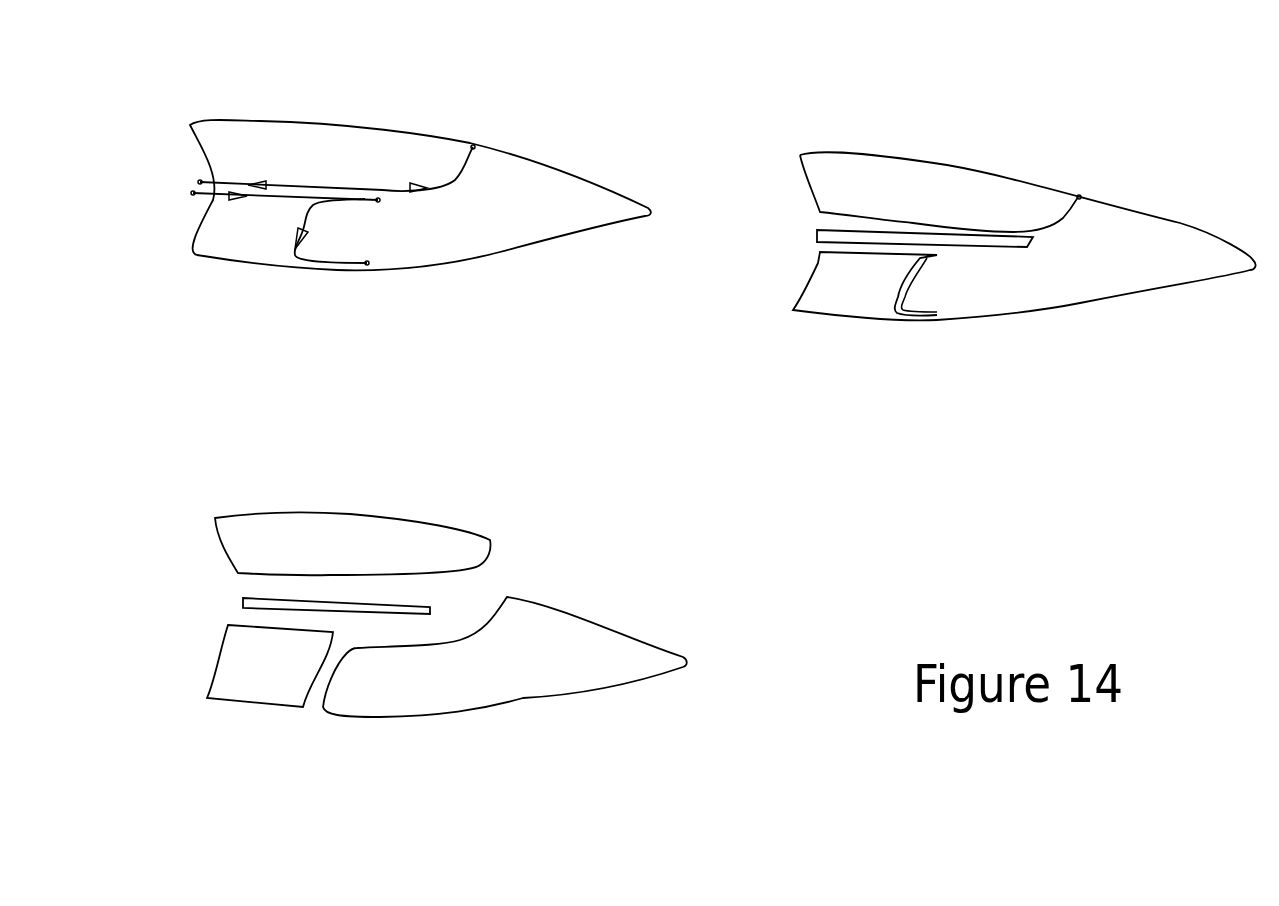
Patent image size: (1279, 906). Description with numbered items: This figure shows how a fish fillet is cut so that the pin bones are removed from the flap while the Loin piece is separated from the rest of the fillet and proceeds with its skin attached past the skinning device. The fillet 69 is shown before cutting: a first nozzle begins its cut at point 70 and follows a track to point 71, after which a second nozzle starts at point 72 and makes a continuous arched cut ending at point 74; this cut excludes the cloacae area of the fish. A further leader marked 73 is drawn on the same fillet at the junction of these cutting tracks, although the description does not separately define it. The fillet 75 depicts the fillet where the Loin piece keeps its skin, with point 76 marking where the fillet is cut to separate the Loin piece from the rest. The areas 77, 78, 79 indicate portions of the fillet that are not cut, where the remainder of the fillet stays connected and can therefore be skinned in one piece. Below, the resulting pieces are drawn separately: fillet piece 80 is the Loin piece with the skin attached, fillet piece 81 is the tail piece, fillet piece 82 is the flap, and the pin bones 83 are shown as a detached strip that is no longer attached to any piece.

The fillet 69 is at (590, 199).
The point 70 is at (475, 134).
The point 71 is at (192, 173).
The point 72 is at (182, 188).
The leader to flow junction 73 is at (383, 185).
The point 74 is at (352, 253).
The fillet 75 is at (1127, 257).
The point 76 is at (1081, 192).
The area 77 is at (1023, 245).
The area 78 is at (927, 255).
The area 79 is at (937, 320).
The fillet piece 80 is at (352, 568).
The fillet piece 81 is at (513, 663).
The fillet piece 82 is at (258, 707).
The pin bones 83 is at (375, 630).